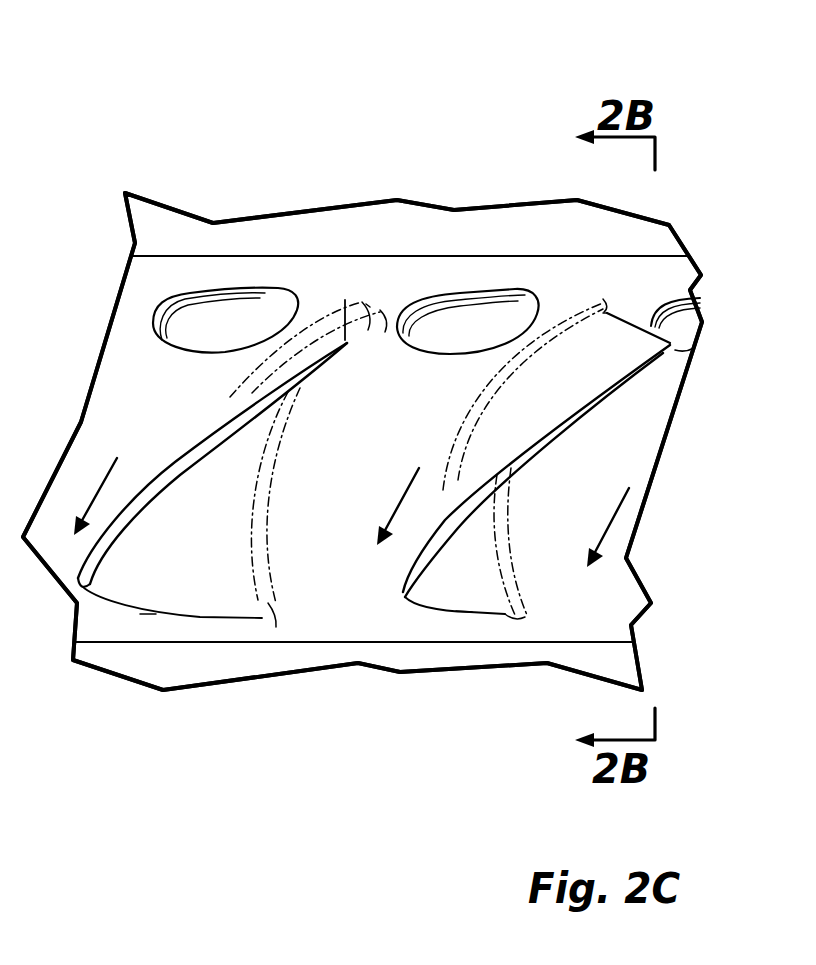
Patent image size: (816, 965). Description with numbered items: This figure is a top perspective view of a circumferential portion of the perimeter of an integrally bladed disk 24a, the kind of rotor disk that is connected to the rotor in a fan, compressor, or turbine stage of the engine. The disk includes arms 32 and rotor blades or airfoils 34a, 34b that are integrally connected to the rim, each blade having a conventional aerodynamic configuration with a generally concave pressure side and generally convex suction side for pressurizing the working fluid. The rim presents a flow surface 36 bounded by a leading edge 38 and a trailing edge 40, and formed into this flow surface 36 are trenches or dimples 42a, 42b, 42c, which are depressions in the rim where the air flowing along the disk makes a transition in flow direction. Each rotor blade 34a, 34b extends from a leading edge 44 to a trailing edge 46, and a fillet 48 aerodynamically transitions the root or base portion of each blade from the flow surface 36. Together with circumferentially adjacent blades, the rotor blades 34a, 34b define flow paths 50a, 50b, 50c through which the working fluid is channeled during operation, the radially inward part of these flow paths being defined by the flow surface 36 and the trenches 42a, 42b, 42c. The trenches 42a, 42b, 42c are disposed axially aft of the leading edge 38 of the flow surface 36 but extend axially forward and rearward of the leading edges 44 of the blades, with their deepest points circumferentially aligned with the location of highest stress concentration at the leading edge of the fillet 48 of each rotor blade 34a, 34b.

The integrally bladed disk 24a is at (484, 84).
The arms 32 is at (287, 230).
The rotor blade 34a is at (580, 400).
The rotor blade 34b is at (197, 442).
The flow surface 36 is at (399, 416).
The leading edge 38 is at (514, 254).
The trailing edge 40 is at (398, 643).
The trench 42a is at (687, 313).
The trench 42b is at (454, 312).
The trench 42c is at (197, 328).
The leading edge 44 is at (345, 302).
The trailing edge 46 is at (148, 614).
The fillet 48 is at (367, 305).
The flow path 50a is at (604, 535).
The flow path 50b is at (394, 512).
The flow path 50c is at (97, 500).